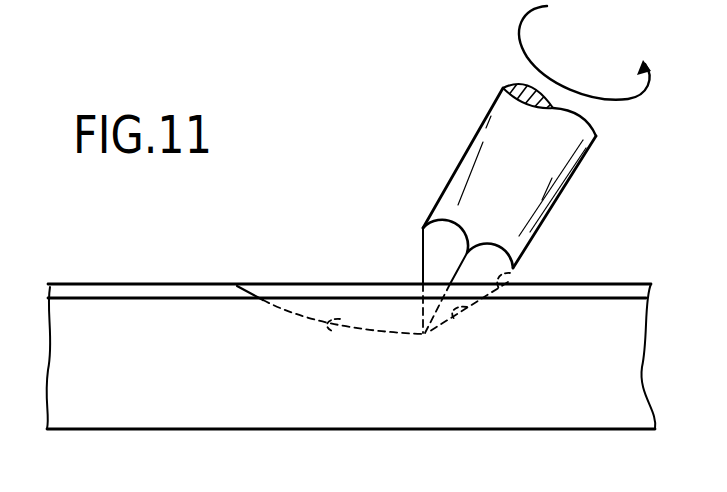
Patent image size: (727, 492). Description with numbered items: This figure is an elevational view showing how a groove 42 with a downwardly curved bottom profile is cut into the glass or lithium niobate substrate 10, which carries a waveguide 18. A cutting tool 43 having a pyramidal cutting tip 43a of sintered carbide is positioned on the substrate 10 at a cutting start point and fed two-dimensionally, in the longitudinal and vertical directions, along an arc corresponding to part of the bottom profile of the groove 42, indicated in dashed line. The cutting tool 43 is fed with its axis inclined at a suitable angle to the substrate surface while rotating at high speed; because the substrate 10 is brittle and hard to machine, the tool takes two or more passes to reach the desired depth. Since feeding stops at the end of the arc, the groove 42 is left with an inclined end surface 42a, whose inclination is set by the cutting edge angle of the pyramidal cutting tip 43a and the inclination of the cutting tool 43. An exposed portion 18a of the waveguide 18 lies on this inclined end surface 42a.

The substrate 10 is at (131, 423).
The waveguide 18 is at (116, 289).
The exposed portion 18a is at (510, 275).
The groove 42 is at (338, 330).
The inclined end surface 42a is at (453, 318).
The cutting tool 43 is at (477, 140).
The pyramidal cutting tip 43a is at (423, 255).